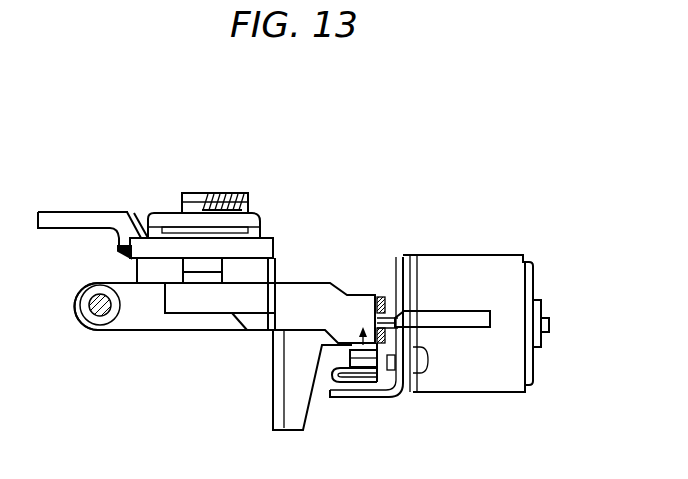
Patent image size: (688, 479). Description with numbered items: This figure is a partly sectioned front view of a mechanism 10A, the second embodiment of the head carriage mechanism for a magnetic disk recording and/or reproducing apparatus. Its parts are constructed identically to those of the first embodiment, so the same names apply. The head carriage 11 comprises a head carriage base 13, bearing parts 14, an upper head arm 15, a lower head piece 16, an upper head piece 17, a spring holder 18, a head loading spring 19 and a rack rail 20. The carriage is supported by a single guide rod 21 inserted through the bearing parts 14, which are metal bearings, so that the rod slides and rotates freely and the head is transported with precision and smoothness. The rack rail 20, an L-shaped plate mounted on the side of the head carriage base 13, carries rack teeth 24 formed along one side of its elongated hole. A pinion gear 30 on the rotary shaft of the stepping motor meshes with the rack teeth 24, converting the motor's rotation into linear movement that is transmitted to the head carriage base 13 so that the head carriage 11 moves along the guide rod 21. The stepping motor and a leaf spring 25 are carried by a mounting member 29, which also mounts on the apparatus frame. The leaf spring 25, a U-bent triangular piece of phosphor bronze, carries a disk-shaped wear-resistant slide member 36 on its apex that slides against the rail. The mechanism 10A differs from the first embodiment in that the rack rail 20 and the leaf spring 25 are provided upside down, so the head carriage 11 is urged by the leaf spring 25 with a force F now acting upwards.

The mechanism 10A is at (494, 128).
The head carriage 11 is at (151, 203).
The head carriage base 13 is at (297, 308).
The bearing parts 14 is at (100, 318).
The upper head arm 15 is at (258, 250).
The lower head piece 16 is at (202, 278).
The upper head piece 17 is at (224, 264).
The spring holder 18 is at (192, 191).
The head loading spring 19 is at (218, 190).
The rack rail 20 is at (378, 298).
The guide rod 21 is at (93, 303).
The rack teeth 24 is at (393, 327).
The leaf spring 25 is at (332, 374).
The mounting member 29 is at (494, 270).
The pinion gear 30 is at (388, 314).
The slide member 36 is at (366, 372).
The force F is at (333, 343).